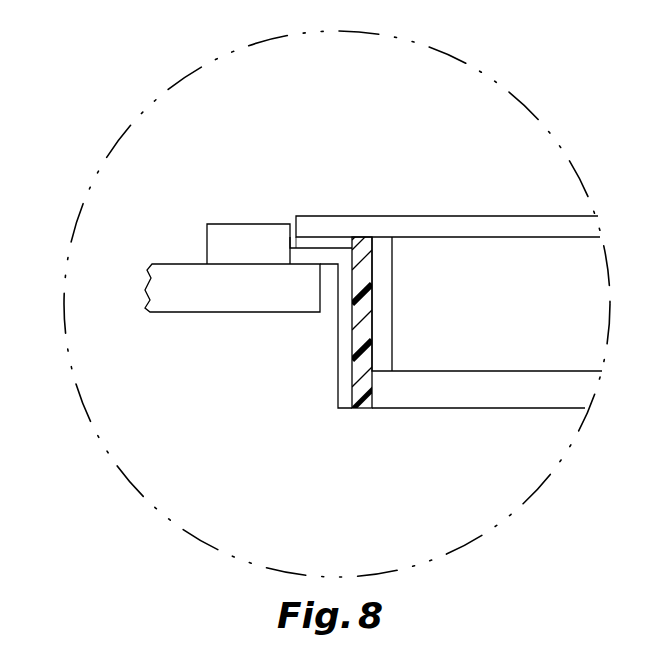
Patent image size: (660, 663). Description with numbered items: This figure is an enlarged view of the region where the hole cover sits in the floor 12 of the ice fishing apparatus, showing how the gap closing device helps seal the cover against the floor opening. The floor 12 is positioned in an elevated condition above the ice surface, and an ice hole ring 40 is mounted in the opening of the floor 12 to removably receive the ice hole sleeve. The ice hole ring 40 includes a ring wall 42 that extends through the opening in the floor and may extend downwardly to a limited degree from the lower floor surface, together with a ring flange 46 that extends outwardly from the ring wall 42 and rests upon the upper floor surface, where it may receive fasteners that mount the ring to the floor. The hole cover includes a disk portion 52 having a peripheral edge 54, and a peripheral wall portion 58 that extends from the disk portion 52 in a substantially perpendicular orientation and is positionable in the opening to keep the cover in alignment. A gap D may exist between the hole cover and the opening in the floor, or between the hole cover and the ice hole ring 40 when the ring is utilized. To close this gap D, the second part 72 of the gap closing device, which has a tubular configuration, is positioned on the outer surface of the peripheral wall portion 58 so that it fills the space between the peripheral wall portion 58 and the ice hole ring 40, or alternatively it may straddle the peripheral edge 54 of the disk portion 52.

The floor 12 is at (208, 302).
The ice hole ring 40 is at (325, 326).
The ring wall 42 is at (349, 386).
The ring flange 46 is at (228, 243).
The disk portion 52 is at (420, 223).
The peripheral edge 54 is at (297, 218).
The peripheral wall portion 58 is at (382, 325).
The second part 72 is at (365, 270).
The gap D is at (323, 246).